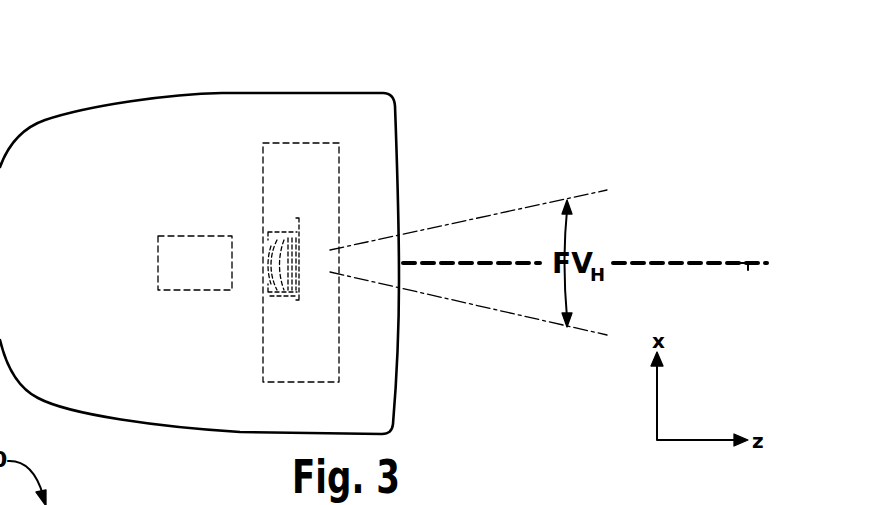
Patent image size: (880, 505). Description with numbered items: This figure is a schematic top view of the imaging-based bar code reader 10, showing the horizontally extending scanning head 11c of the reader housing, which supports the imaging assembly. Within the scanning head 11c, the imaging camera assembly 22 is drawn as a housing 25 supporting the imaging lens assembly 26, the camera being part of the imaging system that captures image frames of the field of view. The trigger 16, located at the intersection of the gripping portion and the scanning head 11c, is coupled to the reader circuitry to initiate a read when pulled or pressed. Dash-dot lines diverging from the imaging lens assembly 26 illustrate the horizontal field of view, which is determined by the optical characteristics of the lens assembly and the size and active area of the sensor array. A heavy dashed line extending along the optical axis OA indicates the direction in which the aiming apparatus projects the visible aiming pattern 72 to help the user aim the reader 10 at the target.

The imaging-based bar code reader 10 is at (44, 76).
The scanning head 11c is at (160, 82).
The trigger 16 is at (200, 263).
The imaging camera assembly 22 is at (244, 380).
The housing 25 is at (308, 138).
The imaging lens assembly 26 is at (277, 318).
The visible aiming pattern 72 is at (745, 272).
The optical axis OA is at (733, 261).